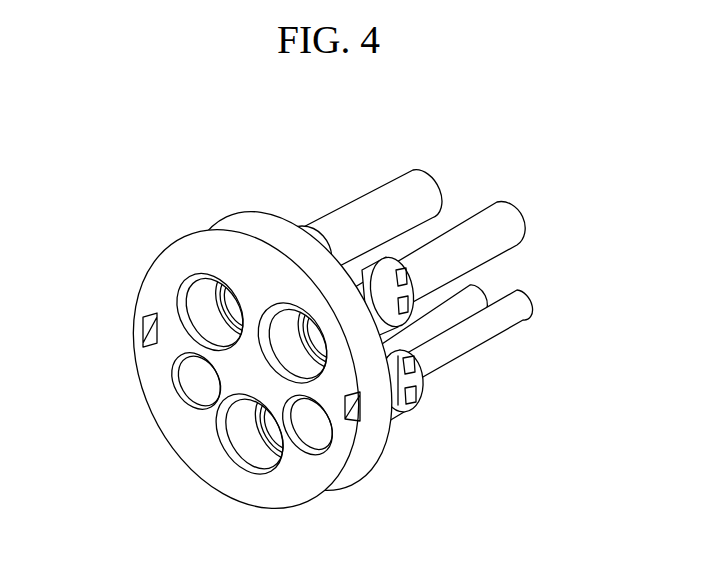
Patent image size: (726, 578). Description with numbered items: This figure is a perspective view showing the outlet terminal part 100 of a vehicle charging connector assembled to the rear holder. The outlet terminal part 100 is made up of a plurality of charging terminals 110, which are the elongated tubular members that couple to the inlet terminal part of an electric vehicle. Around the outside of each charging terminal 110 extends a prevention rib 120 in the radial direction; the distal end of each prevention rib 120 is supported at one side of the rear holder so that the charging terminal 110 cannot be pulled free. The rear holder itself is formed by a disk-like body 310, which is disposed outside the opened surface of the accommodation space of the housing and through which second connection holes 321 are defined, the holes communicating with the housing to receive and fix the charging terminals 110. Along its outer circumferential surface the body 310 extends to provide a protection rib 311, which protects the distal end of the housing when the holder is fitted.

The outlet terminal part 100 is at (423, 280).
The charging terminal 110 is at (472, 338).
The prevention rib 120 is at (422, 380).
The body 310 is at (237, 369).
The protection rib 311 is at (252, 226).
The second connection hole 321 is at (263, 451).